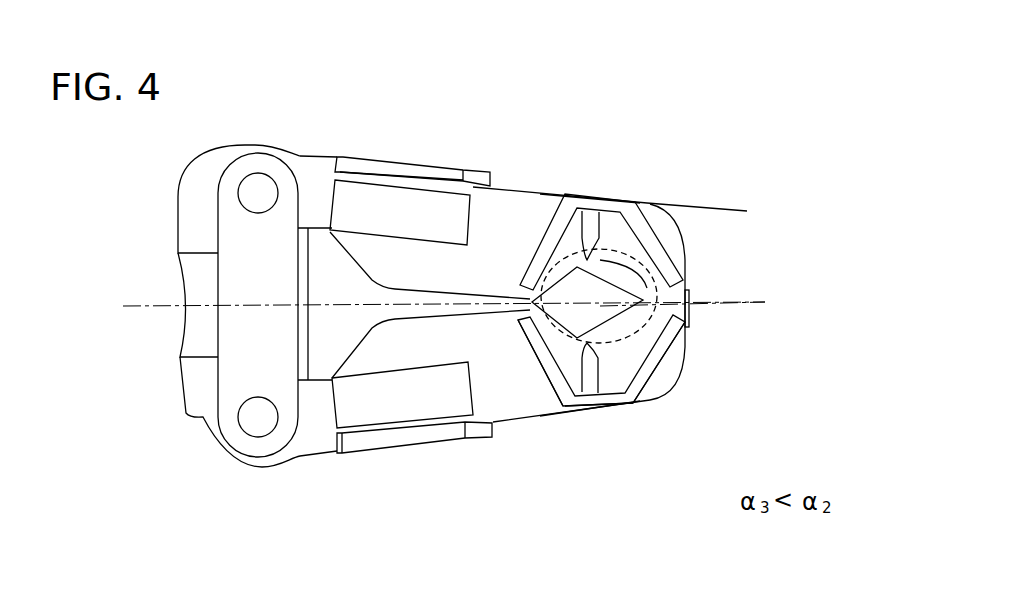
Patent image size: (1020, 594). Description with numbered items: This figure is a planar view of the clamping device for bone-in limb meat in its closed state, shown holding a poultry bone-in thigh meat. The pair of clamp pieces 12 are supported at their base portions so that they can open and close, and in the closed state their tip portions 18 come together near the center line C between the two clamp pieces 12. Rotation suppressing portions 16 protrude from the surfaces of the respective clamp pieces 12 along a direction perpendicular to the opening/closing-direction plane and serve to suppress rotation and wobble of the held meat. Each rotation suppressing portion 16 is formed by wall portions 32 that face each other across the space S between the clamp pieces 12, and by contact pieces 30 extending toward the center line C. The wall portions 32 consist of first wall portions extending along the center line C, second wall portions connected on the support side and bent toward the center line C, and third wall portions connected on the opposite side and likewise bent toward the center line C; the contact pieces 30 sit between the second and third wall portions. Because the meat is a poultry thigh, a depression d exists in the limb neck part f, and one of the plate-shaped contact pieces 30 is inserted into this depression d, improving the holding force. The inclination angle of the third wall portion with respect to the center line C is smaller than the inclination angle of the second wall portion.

The clamp pieces 12 is at (533, 190).
The tip portions 18 is at (653, 204).
The contact pieces 30 is at (581, 210).
The rotation suppressing portions 16 is at (594, 190).
The wall portions 32 is at (672, 350).
The depression d is at (645, 298).
The center line C is at (747, 302).
The limb neck part f is at (641, 203).
The space S is at (348, 295).